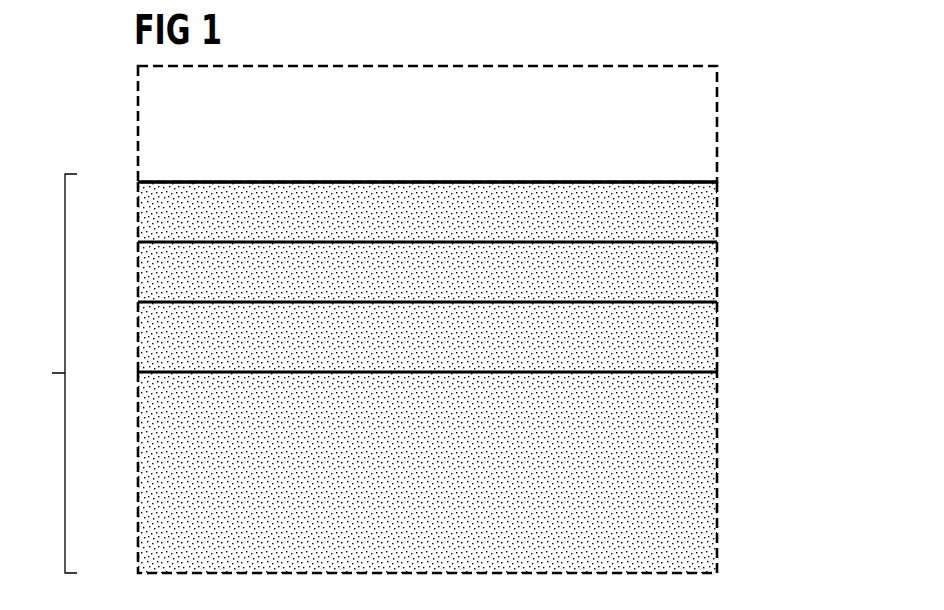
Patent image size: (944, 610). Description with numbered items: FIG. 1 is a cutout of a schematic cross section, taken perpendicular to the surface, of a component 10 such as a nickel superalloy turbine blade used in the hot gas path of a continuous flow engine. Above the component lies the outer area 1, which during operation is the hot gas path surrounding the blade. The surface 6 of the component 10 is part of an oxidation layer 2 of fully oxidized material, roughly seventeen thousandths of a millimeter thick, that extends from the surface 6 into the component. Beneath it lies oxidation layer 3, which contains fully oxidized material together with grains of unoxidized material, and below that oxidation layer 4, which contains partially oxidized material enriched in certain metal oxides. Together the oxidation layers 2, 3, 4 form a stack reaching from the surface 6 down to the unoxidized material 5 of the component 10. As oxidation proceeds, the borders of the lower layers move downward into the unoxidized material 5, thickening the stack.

The outer area 1 is at (712, 128).
The oxidation layer 2 is at (712, 210).
The oxidation layer 3 is at (712, 270).
The oxidation layer 4 is at (712, 340).
The unoxidized material 5 is at (712, 460).
The surface 6 is at (490, 178).
The component 10 is at (41, 373).